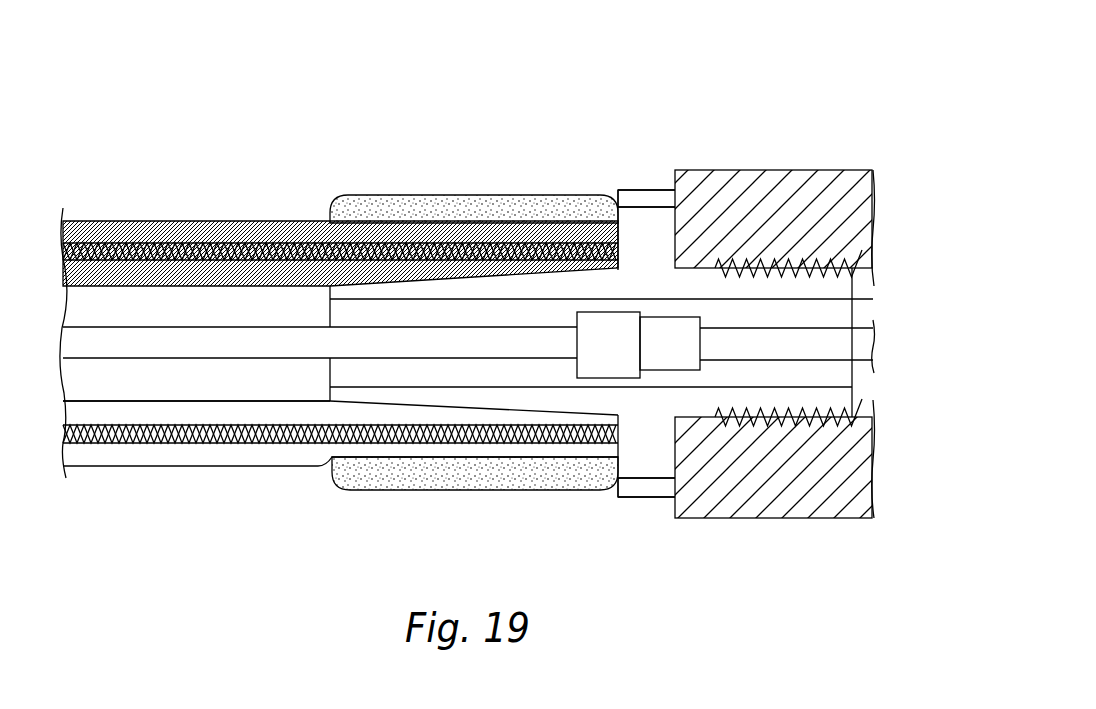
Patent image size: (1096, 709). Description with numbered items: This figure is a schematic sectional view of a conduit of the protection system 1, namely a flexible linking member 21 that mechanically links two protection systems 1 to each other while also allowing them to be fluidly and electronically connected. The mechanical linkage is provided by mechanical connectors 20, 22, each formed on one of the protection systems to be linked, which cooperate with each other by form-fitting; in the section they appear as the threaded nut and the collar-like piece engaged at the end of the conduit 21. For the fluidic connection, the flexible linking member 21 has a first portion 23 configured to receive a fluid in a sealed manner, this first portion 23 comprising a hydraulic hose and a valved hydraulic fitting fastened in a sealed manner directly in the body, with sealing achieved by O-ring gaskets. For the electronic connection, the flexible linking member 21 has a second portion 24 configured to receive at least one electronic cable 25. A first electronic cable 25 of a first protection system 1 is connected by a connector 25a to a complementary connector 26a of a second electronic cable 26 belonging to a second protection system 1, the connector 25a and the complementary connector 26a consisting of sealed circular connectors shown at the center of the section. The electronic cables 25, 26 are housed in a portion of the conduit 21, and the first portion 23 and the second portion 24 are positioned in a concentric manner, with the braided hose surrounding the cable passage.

The protection system 1 is at (735, 116).
The mechanical connector 20 is at (796, 245).
The flexible linking member 21 is at (476, 496).
The mechanical connector 22 is at (650, 460).
The first portion 23 is at (193, 242).
The second portion 24 is at (122, 312).
The first electronic cable 25 is at (160, 345).
The connector 25a is at (605, 330).
The second electronic cable 26 is at (812, 338).
The complementary connector 26a is at (681, 348).